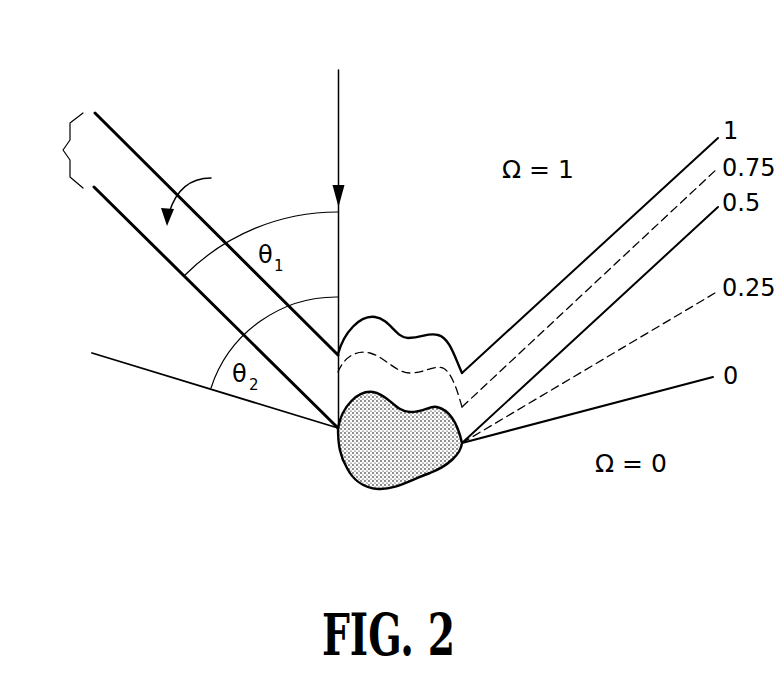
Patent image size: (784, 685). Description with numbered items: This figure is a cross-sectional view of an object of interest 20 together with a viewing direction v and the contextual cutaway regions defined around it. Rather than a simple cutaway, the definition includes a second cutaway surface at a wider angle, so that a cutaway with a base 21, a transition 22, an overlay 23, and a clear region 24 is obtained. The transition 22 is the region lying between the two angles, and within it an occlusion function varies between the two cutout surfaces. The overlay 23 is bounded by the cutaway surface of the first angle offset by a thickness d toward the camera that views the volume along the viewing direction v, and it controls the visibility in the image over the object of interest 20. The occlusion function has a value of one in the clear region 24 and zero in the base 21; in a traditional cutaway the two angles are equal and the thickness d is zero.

The object of interest 20 is at (366, 496).
The base 21 is at (215, 413).
The transition 22 is at (175, 307).
The overlay 23 is at (178, 224).
The clear region 24 is at (271, 229).